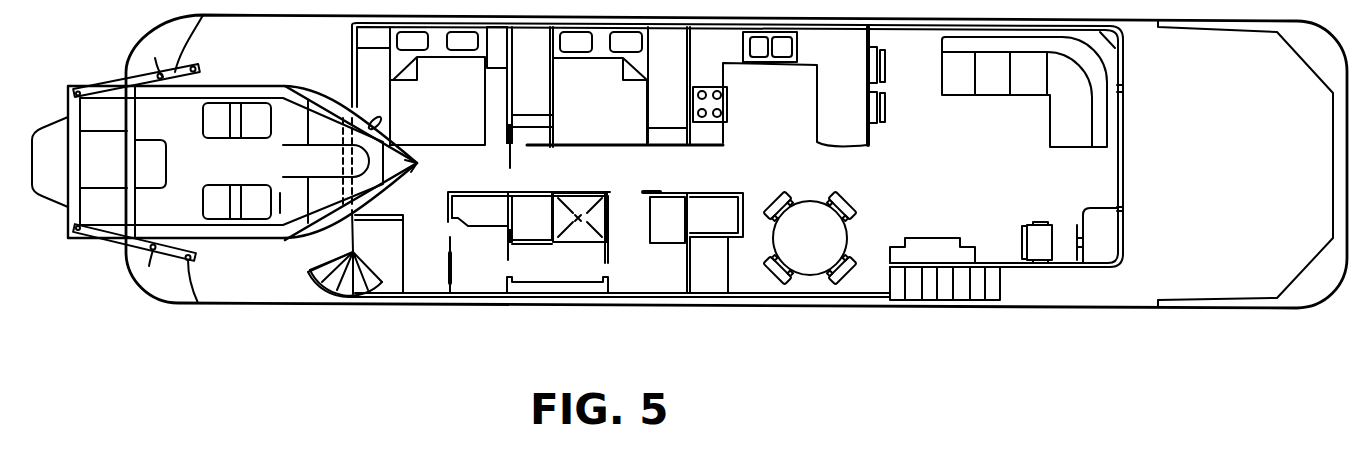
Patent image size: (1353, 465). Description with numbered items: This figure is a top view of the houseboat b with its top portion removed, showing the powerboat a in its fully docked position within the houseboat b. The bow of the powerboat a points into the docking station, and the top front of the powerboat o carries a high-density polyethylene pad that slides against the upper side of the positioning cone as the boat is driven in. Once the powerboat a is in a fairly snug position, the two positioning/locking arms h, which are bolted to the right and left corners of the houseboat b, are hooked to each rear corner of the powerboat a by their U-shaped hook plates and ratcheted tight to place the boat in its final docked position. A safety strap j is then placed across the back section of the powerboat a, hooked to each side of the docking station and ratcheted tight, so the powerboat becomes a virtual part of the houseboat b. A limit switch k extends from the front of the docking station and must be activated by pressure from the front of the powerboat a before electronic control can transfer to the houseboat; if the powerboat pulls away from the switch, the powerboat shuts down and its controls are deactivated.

The powerboat a is at (280, 216).
The houseboat b is at (1032, 306).
The positioning/locking arms h is at (100, 88).
The safety strap j is at (135, 158).
The limit switch k is at (374, 130).
The top front of the powerboat o is at (413, 165).